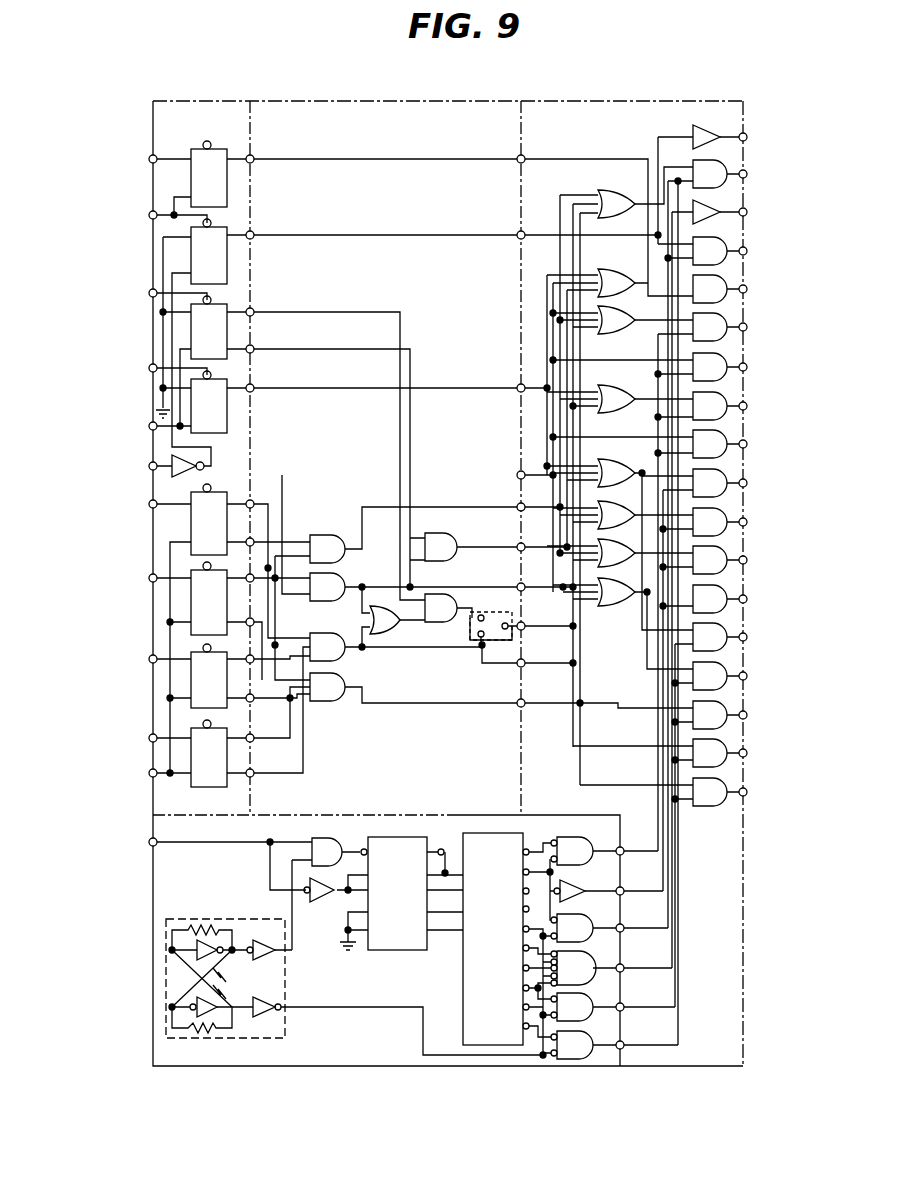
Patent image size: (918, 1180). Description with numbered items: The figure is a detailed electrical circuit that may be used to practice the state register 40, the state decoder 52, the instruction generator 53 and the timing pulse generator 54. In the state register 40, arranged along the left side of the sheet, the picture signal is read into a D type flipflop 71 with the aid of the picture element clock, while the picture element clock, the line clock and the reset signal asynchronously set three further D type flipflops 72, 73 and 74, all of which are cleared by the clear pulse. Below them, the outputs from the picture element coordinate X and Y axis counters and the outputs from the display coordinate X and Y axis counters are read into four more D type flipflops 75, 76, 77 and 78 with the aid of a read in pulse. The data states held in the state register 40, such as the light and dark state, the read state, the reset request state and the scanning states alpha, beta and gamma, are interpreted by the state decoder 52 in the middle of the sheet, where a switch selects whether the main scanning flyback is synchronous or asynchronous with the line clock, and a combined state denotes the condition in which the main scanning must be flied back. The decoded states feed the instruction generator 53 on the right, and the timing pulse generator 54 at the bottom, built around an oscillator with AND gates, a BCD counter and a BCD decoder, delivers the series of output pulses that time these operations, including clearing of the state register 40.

The state register 40 is at (198, 101).
The state decoder 52 is at (414, 101).
The instruction generator 53 is at (587, 101).
The timing pulse generator 54 is at (250, 1068).
The D type flipflop 71 is at (227, 157).
The D type flipflop 72 is at (227, 233).
The D type flipflop 73 is at (227, 307).
The D type flipflop 74 is at (227, 383).
The D type flipflop 75 is at (227, 495).
The D type flipflop 76 is at (191, 572).
The D type flipflop 77 is at (191, 654).
The D type flipflop 78 is at (193, 730).